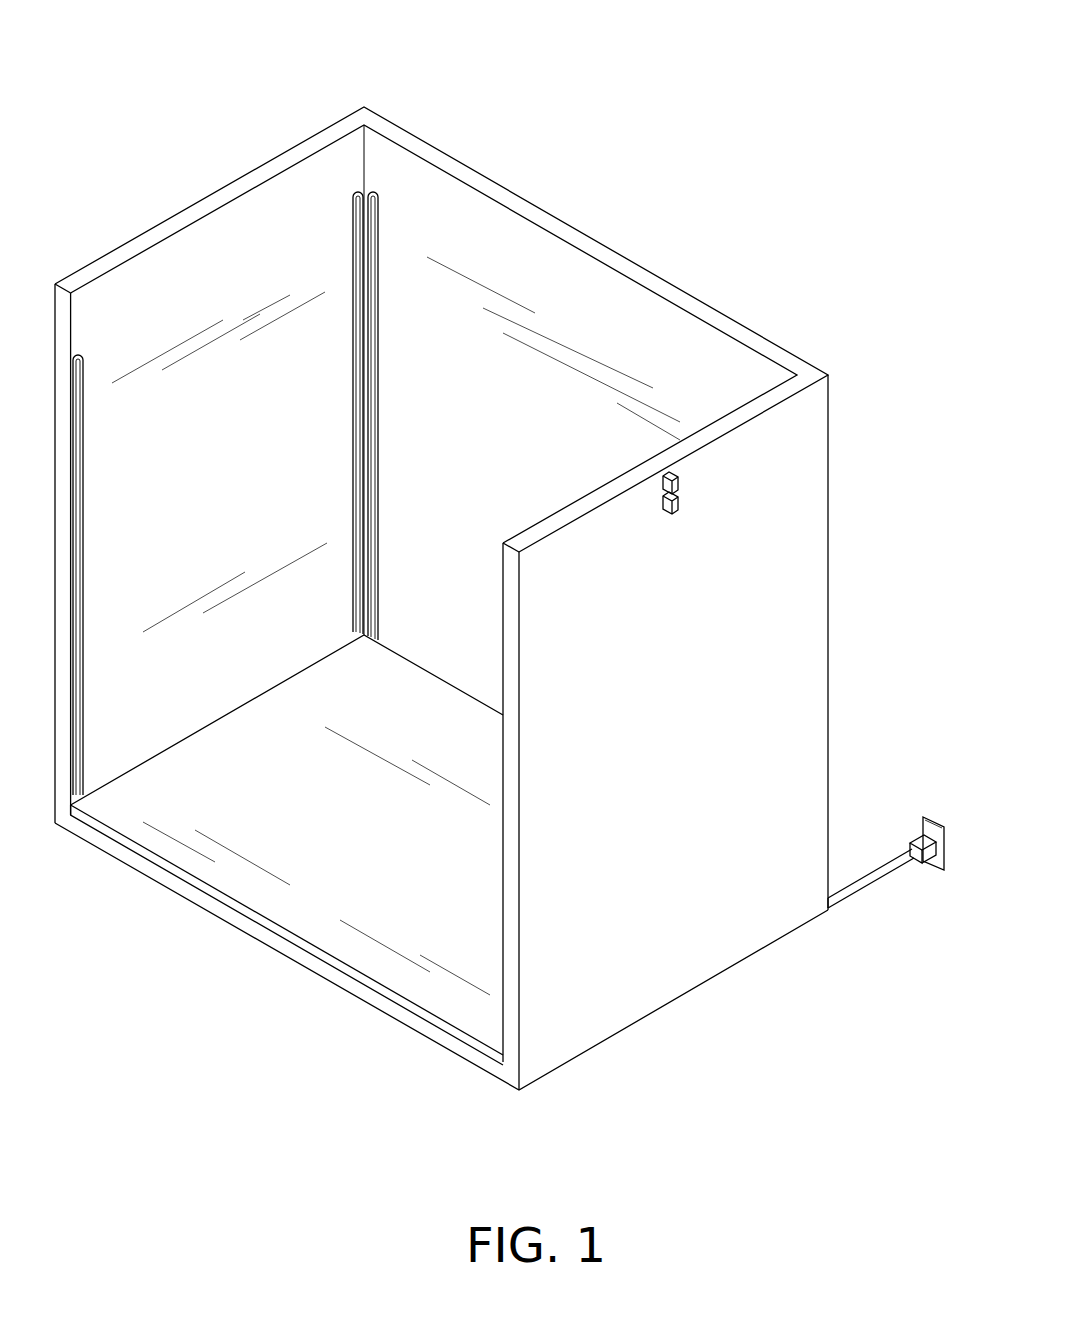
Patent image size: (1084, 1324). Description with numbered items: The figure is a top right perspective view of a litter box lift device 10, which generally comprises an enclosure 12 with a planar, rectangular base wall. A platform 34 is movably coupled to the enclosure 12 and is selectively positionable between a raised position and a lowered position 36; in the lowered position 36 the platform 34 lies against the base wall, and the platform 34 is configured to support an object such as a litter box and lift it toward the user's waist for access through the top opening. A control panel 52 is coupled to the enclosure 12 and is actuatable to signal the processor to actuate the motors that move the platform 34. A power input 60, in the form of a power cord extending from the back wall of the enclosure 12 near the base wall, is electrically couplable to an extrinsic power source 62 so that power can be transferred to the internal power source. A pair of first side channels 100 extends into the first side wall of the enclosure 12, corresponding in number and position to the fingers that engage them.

The litter box lift device 10 is at (748, 149).
The enclosure 12 is at (512, 153).
The platform 34 is at (255, 840).
The lowered position 36 is at (135, 884).
The control panel 52 is at (706, 469).
The power input 60 is at (881, 870).
The extrinsic power source 62 is at (925, 812).
The first side channels 100 is at (108, 393).